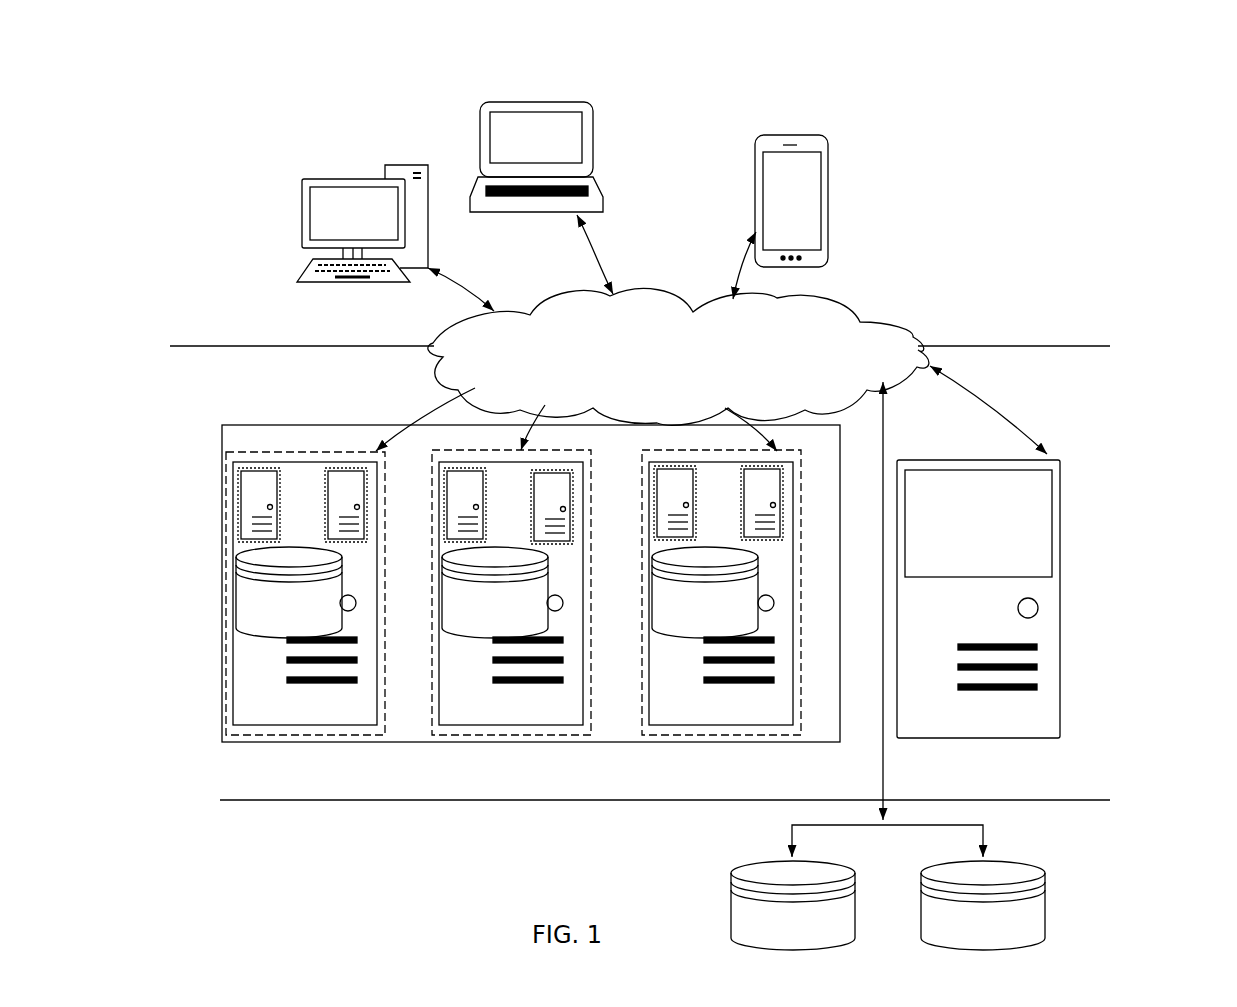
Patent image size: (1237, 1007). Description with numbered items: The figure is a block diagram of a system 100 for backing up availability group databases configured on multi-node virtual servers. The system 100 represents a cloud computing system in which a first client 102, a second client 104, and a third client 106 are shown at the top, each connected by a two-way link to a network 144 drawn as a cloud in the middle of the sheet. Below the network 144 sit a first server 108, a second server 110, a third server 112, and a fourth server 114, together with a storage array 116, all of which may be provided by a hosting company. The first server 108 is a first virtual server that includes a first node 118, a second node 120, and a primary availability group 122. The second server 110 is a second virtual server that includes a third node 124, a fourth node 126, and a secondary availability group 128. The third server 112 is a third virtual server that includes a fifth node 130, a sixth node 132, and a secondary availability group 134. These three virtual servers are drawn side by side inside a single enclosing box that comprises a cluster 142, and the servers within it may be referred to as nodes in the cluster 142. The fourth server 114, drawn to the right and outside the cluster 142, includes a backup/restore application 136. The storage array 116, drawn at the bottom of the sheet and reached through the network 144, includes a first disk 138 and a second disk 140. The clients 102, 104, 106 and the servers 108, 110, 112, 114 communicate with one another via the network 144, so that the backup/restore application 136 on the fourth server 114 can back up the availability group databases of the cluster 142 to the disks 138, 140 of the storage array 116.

The system 100 is at (646, 126).
The first client 102 is at (336, 178).
The second client 104 is at (497, 110).
The third client 106 is at (788, 140).
The first server 108 is at (372, 452).
The second server 110 is at (490, 450).
The third server 112 is at (680, 452).
The fourth server 114 is at (990, 458).
The storage array 116 is at (926, 887).
The first node 118 is at (259, 505).
The second node 120 is at (346, 505).
The primary availability group 122 is at (236, 600).
The third node 124 is at (465, 505).
The fourth node 126 is at (552, 507).
The secondary availability group 128 is at (442, 600).
The fifth node 130 is at (675, 503).
The sixth node 132 is at (762, 503).
The secondary availability group 134 is at (652, 600).
The backup/restore application 136 is at (978, 523).
The first disk 138 is at (750, 863).
The second disk 140 is at (933, 864).
The cluster 142 is at (815, 745).
The network 144 is at (678, 554).